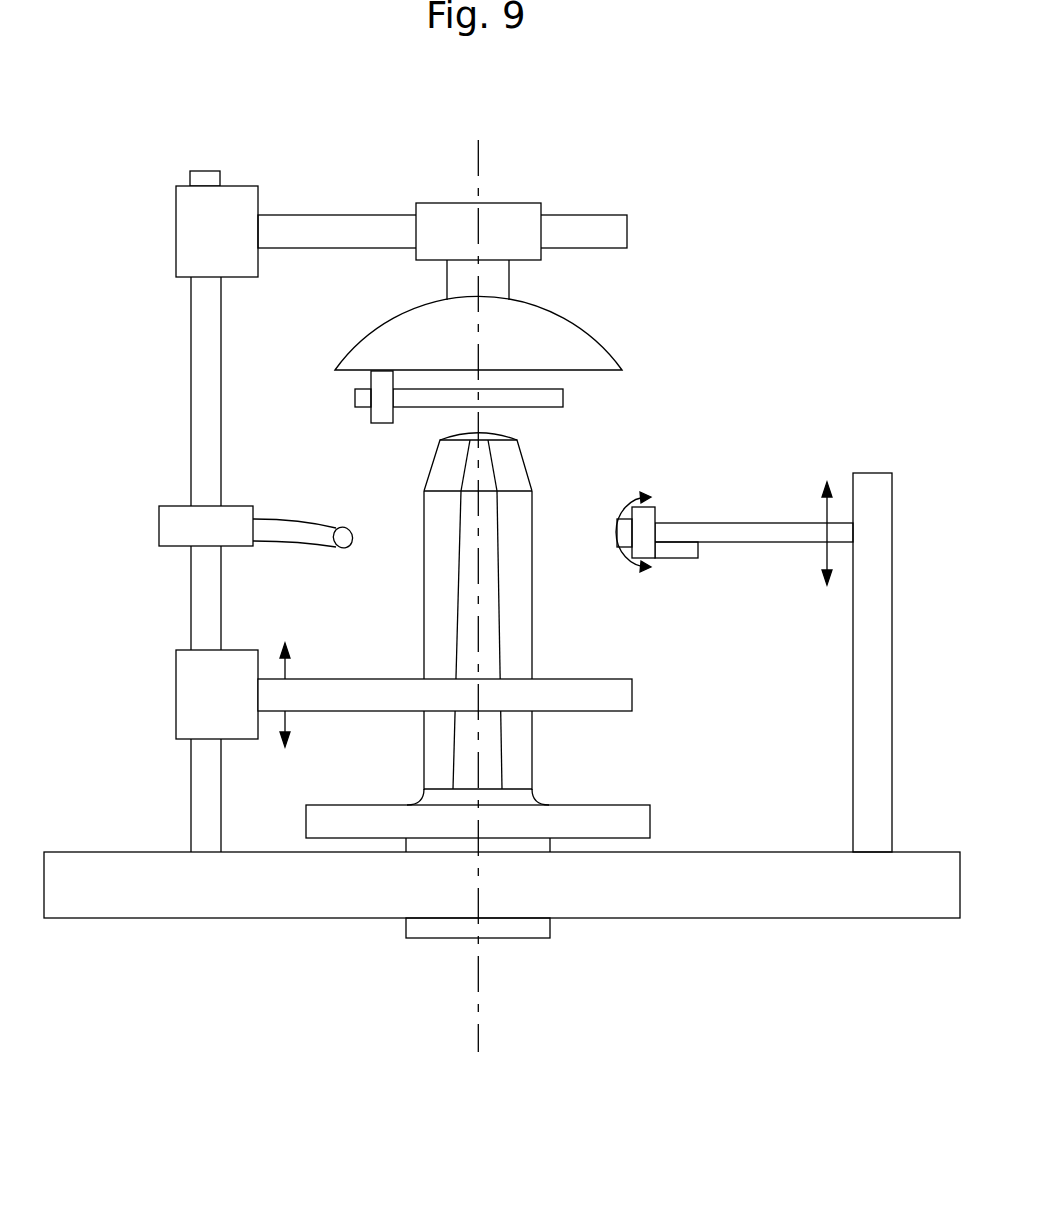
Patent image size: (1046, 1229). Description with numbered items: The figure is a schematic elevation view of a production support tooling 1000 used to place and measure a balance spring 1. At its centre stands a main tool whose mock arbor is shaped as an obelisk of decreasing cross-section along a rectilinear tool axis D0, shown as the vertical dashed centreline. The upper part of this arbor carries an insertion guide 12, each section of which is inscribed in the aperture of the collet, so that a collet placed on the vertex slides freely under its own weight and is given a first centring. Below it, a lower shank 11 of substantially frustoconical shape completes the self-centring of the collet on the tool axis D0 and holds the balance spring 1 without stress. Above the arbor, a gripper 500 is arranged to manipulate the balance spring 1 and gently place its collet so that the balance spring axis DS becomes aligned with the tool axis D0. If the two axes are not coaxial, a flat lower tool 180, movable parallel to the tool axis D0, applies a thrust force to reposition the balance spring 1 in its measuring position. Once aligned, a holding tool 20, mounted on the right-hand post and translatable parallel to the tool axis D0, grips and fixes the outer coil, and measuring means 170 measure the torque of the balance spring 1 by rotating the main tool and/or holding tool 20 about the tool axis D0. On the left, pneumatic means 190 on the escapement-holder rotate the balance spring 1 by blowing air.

The production support tooling 1000 is at (822, 398).
The gripper 500 is at (528, 323).
The balance spring axis DS is at (495, 345).
The balance spring 1 is at (552, 398).
The lower shank 11 is at (440, 623).
The insertion guide 12 is at (537, 464).
The flat lower tool 180 is at (597, 700).
The measuring means 170 is at (660, 550).
The pneumatic means 190 is at (293, 527).
The holding tool 20 is at (650, 518).
The tool axis D0 is at (464, 1019).